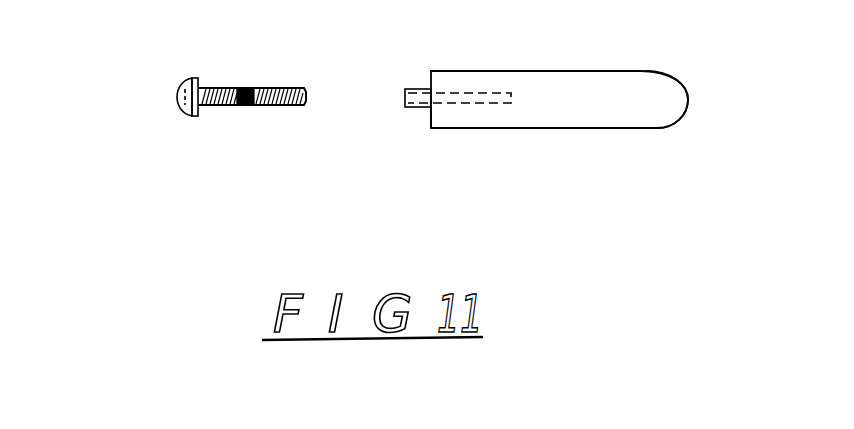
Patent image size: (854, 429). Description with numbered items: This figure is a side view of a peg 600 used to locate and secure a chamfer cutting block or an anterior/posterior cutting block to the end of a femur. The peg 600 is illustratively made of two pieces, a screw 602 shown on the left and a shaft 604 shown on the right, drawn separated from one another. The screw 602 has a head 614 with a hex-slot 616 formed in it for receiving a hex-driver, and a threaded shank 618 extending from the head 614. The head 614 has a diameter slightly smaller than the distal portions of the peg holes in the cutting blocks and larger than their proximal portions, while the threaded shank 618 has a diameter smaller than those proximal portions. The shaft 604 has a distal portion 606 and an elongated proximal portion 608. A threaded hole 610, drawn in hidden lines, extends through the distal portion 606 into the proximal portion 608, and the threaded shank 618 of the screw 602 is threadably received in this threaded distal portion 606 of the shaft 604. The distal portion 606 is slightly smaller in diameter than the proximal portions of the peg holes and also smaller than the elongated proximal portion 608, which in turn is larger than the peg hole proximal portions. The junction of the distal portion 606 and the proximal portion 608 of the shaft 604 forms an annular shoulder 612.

The peg 600 is at (260, 151).
The screw 602 is at (212, 87).
The shaft 604 is at (500, 71).
The distal portion 606 is at (410, 89).
The elongated proximal portion 608 is at (640, 71).
The threaded hole 610 is at (455, 105).
The annular shoulder 612 is at (432, 112).
The head 614 is at (183, 79).
The hex-slot 616 is at (177, 97).
The threaded shank 618 is at (265, 87).